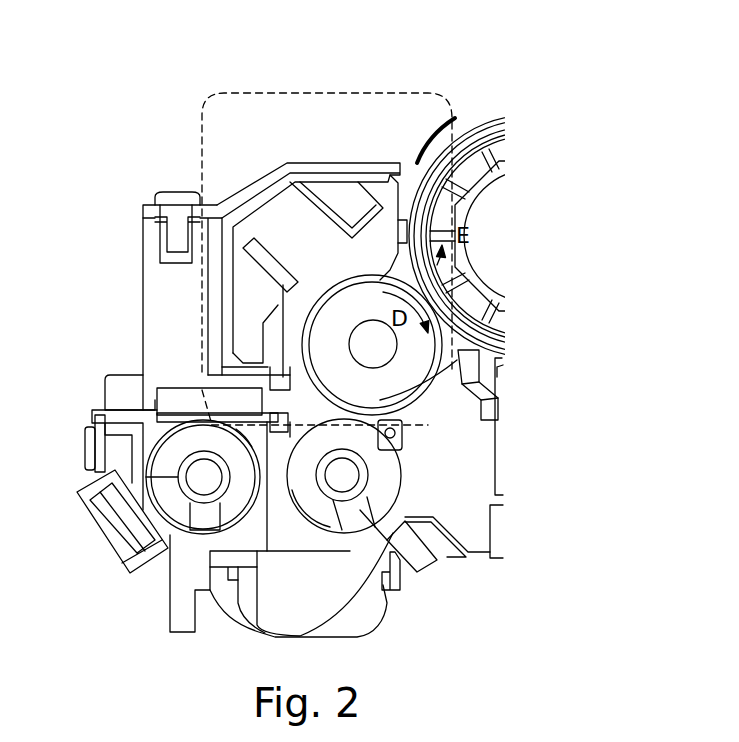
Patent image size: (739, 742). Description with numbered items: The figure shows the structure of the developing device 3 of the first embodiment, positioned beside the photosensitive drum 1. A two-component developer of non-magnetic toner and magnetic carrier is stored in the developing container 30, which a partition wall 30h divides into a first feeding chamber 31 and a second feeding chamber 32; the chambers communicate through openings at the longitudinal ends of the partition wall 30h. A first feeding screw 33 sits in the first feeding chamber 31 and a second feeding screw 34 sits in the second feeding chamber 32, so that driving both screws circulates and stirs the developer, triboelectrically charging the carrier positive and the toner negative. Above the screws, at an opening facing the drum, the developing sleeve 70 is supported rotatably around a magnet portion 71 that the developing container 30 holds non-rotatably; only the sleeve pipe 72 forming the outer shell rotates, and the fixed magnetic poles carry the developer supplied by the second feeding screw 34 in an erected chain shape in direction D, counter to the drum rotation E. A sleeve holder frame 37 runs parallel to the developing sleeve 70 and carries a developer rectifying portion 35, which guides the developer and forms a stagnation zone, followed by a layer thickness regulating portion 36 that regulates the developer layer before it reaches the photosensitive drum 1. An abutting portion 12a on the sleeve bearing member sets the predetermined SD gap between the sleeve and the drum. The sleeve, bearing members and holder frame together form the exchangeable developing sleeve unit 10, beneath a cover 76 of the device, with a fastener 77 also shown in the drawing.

The developing device 3 is at (163, 134).
The developing sleeve unit 10 is at (385, 93).
The fixing screw 77 is at (155, 195).
The developing container 30 is at (163, 298).
The first feeding chamber 31 is at (162, 428).
The sleeve holder frame 37 is at (278, 215).
The cover 76 is at (323, 165).
The layer thickness regulating portion 36 is at (342, 258).
The developer rectifying portion 35 is at (320, 282).
The developing sleeve 70 is at (293, 330).
The magnet portion 71 is at (398, 380).
The sleeve pipe 72 is at (449, 382).
The photosensitive drum 1 is at (493, 180).
The abutting portion 12a is at (497, 367).
The partition wall 30h is at (256, 457).
The second feeding chamber 32 is at (295, 433).
The first feeding screw 33 is at (205, 522).
The second feeding screw 34 is at (397, 537).